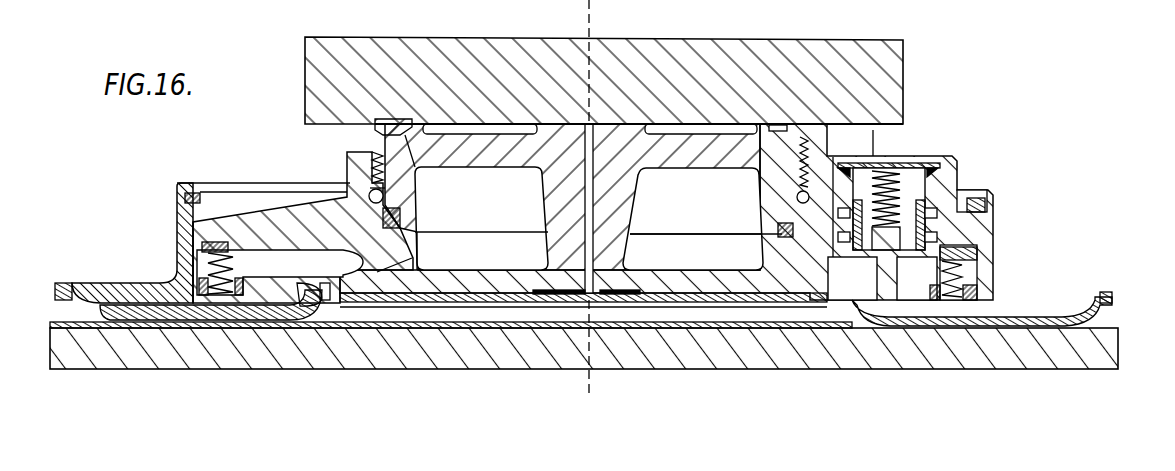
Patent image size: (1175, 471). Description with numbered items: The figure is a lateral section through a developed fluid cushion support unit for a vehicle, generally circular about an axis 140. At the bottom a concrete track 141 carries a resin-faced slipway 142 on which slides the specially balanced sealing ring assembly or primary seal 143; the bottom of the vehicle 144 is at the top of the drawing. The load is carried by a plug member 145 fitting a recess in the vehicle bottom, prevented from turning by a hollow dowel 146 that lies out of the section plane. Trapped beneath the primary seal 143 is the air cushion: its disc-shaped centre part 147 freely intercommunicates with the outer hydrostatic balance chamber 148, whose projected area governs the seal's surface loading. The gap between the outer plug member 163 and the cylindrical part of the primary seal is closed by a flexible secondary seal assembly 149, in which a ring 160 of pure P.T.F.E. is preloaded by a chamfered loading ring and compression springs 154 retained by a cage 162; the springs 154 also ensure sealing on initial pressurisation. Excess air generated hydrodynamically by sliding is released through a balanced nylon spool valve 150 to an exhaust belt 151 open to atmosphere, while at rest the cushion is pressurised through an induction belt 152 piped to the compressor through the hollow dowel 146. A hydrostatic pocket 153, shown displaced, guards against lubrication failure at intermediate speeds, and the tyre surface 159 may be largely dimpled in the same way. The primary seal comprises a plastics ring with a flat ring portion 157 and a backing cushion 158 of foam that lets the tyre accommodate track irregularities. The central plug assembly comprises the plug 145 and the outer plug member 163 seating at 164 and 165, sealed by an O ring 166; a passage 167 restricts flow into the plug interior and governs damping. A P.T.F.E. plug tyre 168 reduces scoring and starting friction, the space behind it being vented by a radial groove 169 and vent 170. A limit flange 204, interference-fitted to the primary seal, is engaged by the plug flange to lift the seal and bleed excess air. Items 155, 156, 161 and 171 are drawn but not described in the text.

The axis 140 is at (591, 28).
The concrete track 141 is at (305, 352).
The resin-faced slipway 142 is at (1102, 330).
The primary seal 143 is at (175, 221).
The vehicle bottom 144 is at (707, 50).
The plug member 145 is at (385, 156).
The hollow dowel 146 is at (865, 141).
The centre part of air cushion 147 is at (537, 312).
The hydrostatic balance chamber 148 is at (300, 277).
The secondary seal assembly 149 is at (972, 267).
The spool valve 150 is at (910, 200).
The exhaust belt 151 is at (970, 192).
The induction belt 152 is at (927, 240).
The hydrostatic pocket 153 is at (150, 303).
The springs 154 is at (950, 300).
The wall 155 is at (180, 252).
The seal 156 is at (206, 212).
The flat ring portion 157 is at (264, 300).
The backing cushion 158 is at (225, 305).
The tyre surface 159 is at (995, 327).
The P.T.F.E. ring 160 is at (967, 250).
The chamber 161 is at (937, 265).
The cage 162 is at (967, 297).
The outer plug member 163 is at (263, 222).
The seat 164 is at (416, 222).
The seat 165 is at (633, 233).
The O ring 166 is at (420, 210).
The passage 167 is at (416, 258).
The plug tyre 168 is at (670, 303).
The radial groove 169 is at (602, 297).
The vent 170 is at (402, 140).
The flange 171 is at (196, 261).
The limit flange 204 is at (308, 200).